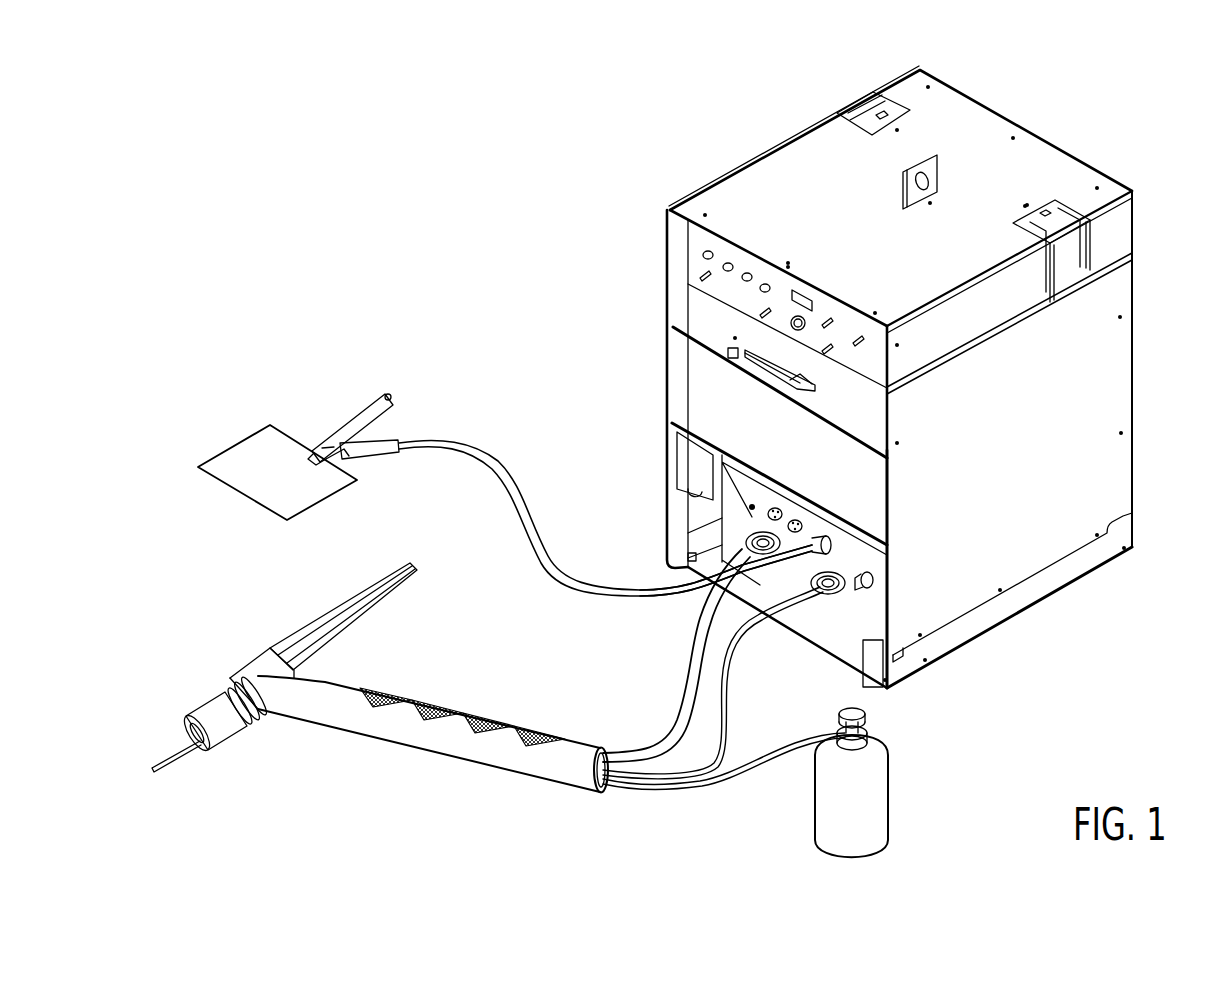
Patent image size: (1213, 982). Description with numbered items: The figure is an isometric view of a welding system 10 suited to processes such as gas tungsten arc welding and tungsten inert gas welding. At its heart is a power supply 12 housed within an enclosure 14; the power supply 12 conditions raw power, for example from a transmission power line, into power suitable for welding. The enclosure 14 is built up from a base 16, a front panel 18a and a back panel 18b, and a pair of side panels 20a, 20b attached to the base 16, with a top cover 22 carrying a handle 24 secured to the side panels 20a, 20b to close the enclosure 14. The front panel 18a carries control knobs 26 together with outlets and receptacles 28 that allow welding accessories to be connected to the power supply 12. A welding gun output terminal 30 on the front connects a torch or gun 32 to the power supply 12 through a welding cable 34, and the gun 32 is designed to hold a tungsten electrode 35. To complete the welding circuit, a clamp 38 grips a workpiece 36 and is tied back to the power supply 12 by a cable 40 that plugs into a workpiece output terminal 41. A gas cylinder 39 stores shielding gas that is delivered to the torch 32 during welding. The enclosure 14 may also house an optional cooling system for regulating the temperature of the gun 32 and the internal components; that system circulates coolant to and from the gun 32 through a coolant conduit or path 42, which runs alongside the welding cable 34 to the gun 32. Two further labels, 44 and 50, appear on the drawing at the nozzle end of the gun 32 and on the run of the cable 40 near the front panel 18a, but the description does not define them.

The welding system 10 is at (424, 292).
The power supply 12 is at (1083, 133).
The enclosure 14 is at (766, 167).
The base 16 is at (855, 630).
The front panel 18a is at (886, 498).
The back panel 18b is at (1145, 392).
The side panel 20a is at (1032, 458).
The side panel 20b is at (656, 260).
The top cover 22 is at (861, 239).
The handle 24 is at (934, 160).
The control knobs 26 is at (806, 336).
The outlets and receptacles 28 is at (753, 515).
The welding gun output terminal 30 is at (834, 602).
The torch or gun 32 is at (433, 740).
The welding cable 34 is at (688, 793).
The tungsten electrode 35 is at (177, 745).
The workpiece 36 is at (250, 478).
The clamp 38 is at (342, 415).
The gas cylinder 39 is at (880, 815).
The cable 40 is at (440, 443).
The workpiece output terminal 41 is at (745, 548).
The coolant conduit or path 42 is at (680, 712).
The torch nozzle 44 is at (225, 737).
The work cable end 50 is at (672, 602).